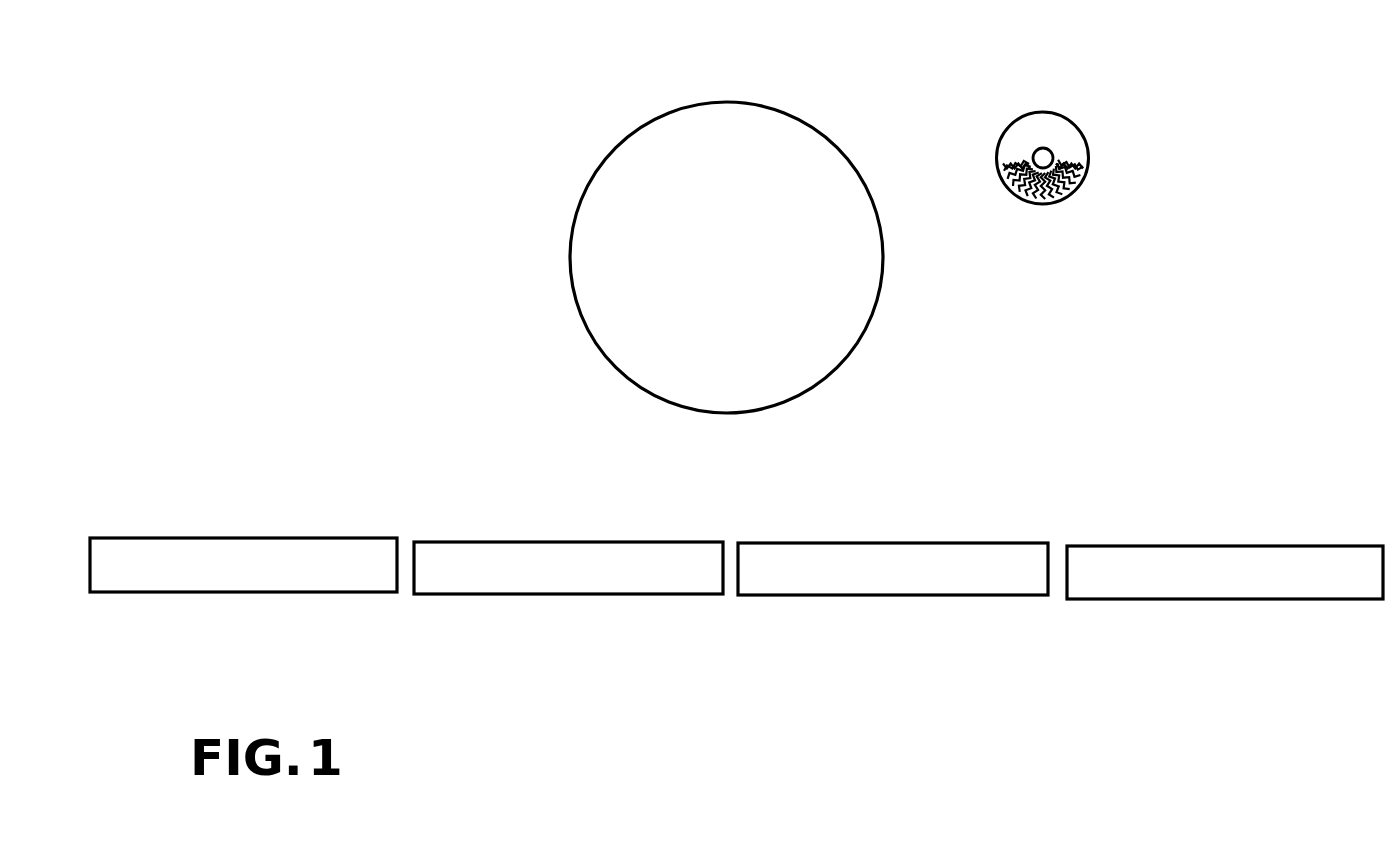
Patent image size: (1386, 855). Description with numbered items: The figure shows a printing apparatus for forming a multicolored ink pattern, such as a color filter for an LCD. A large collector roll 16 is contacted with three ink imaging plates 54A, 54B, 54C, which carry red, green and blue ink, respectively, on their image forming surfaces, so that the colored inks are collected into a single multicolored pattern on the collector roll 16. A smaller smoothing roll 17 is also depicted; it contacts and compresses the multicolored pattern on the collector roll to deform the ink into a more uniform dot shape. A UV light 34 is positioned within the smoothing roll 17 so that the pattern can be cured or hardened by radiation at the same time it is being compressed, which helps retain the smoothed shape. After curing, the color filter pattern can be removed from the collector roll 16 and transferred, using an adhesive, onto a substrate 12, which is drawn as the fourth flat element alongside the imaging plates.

The substrate 12 is at (1132, 588).
The collector roll 16 is at (704, 268).
The smoothing roll 17 is at (1080, 128).
The UV light 34 is at (1044, 148).
The ink imaging plate 54A is at (210, 580).
The ink imaging plate 54B is at (523, 582).
The ink imaging plate 54C is at (853, 585).